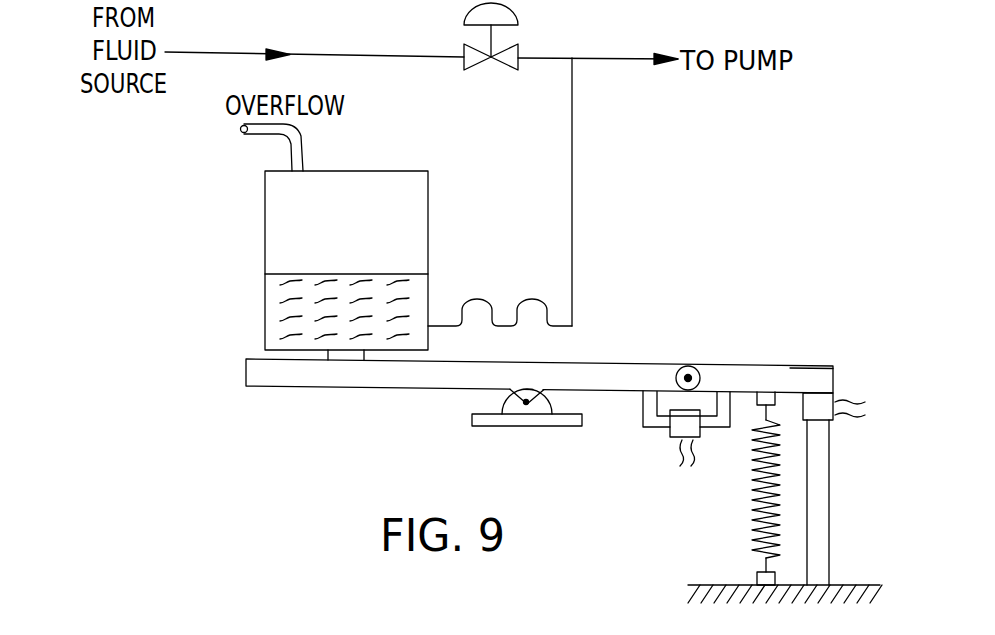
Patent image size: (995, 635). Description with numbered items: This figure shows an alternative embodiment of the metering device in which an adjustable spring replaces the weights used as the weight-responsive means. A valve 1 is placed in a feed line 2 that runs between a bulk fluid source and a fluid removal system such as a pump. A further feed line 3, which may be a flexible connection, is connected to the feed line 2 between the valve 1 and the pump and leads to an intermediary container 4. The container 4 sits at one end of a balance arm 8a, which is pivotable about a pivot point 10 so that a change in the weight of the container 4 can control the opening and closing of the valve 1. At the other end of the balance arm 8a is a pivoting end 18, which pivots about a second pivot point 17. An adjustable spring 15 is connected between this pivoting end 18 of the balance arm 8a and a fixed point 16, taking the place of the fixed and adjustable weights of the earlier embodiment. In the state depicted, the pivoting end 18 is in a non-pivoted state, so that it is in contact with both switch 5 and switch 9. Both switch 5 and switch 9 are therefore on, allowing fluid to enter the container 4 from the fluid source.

The valve 1 is at (470, 68).
The feed line 2 is at (355, 53).
The feed line 3 is at (572, 160).
The intermediary container 4 is at (428, 212).
The switch 5 is at (818, 397).
The balance arm 8a is at (408, 383).
The switch 9 is at (672, 432).
The pivot point 10 is at (528, 406).
The adjustable spring 15 is at (752, 487).
The fixed point 16 is at (755, 578).
The second pivot point 17 is at (691, 376).
The pivoting end 18 is at (787, 368).